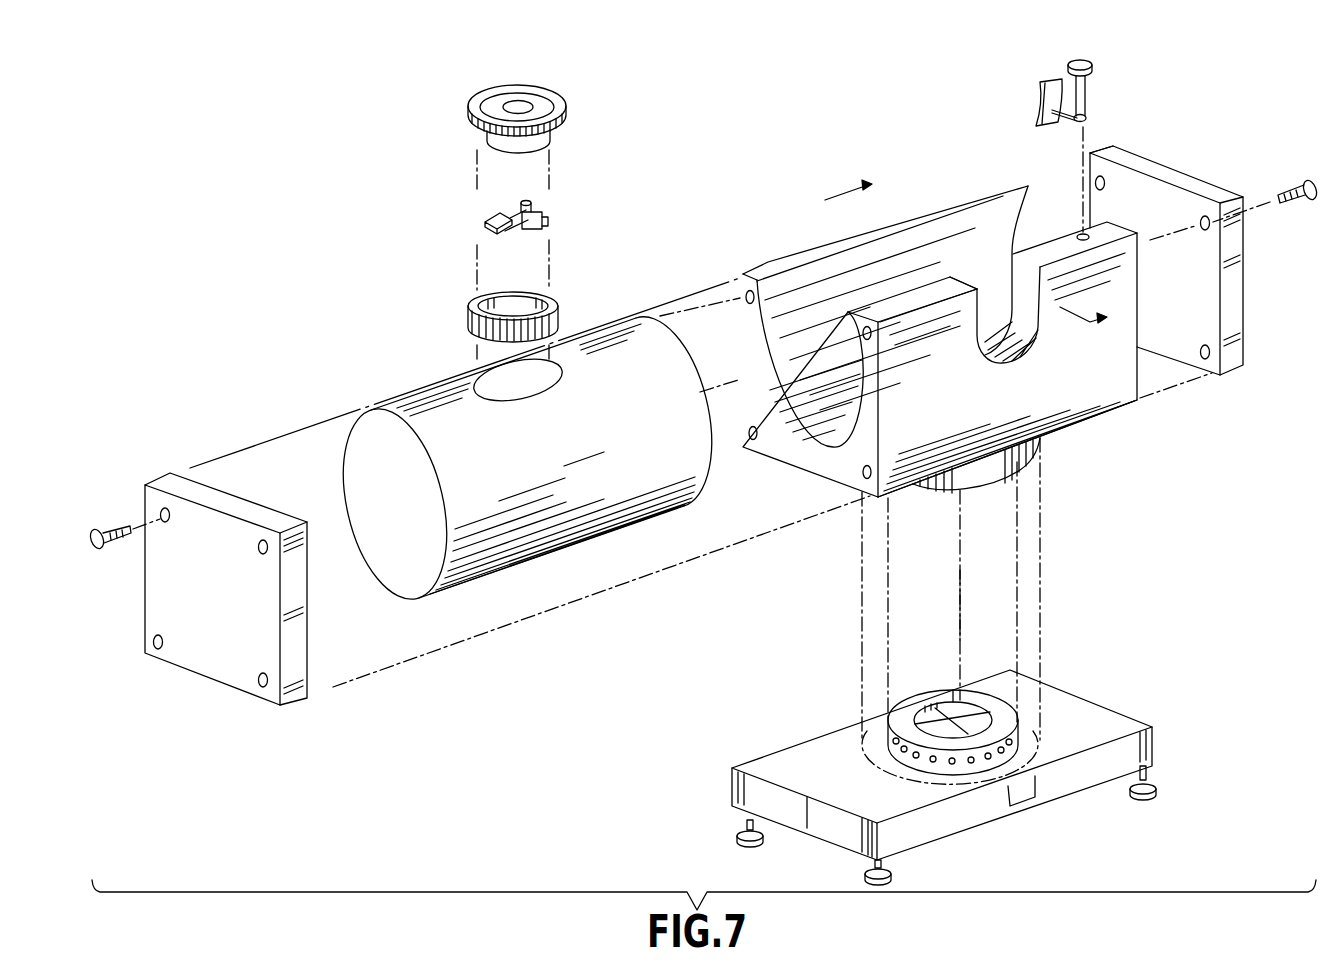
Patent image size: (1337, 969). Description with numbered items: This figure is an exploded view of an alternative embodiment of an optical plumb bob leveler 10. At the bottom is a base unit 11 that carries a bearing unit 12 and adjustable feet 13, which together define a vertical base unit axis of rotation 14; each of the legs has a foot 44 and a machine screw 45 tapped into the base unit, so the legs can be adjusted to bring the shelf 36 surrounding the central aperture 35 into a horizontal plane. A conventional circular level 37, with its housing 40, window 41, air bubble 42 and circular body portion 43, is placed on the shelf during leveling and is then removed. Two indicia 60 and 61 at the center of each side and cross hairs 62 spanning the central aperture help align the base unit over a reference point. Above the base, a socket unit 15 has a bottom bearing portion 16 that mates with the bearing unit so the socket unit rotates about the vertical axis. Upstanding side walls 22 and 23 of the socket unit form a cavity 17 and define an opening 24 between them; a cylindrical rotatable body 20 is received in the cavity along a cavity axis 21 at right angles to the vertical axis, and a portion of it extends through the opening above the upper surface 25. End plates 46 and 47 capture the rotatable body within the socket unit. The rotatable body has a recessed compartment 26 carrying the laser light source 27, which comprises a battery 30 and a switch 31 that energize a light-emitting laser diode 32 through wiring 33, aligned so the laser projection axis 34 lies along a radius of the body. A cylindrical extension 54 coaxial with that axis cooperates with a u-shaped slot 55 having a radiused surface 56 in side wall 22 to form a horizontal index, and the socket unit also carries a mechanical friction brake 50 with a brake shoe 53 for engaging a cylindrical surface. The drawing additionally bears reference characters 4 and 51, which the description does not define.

The section line 4- 4 is at (976, 245).
The optical plumb bob leveler 10 is at (1235, 128).
The base unit 11 is at (1128, 712).
The bearing unit 12 is at (993, 692).
The adjustable feet 13 is at (934, 825).
The base unit axis of rotation 14 is at (960, 566).
The socket unit 15 is at (917, 339).
The bottom bearing portion 16 is at (1033, 457).
The cavity 17 is at (812, 278).
The cylindrical rotatable body 20 is at (568, 537).
The cavity axis 21 is at (740, 385).
The upstanding side wall 22 is at (912, 475).
The upstanding side wall 23 is at (740, 332).
The opening 24 is at (828, 245).
The upper surface 25 is at (948, 202).
The recessed compartment 26 is at (490, 384).
The laser light source 27 is at (488, 205).
The battery 30 is at (485, 222).
The switch 31 is at (548, 220).
The light-emitting laser diode 32 is at (533, 202).
The wiring 33 is at (532, 230).
The laser projection axis 34 is at (510, 308).
The central aperture 35 is at (943, 710).
The shelf 36 is at (1003, 720).
The circular level 37 is at (568, 122).
The housing 40 is at (555, 132).
The window 41 is at (543, 108).
The air bubble 42 is at (530, 105).
The circular body portion 43 is at (500, 147).
The foot 44 is at (738, 830).
The machine screw 45 is at (752, 823).
The end plate 46 is at (158, 592).
The end plate 47 is at (1193, 176).
The mechanical friction brake 50 is at (1095, 112).
The pin head 51 is at (1088, 90).
The brake shoe 53 is at (1075, 118).
The cylindrical extension 54 is at (557, 307).
The u-shaped slot 55 is at (980, 303).
The radiused surface 56 is at (1036, 340).
The indicia 60 is at (1013, 798).
The indicia 61 is at (812, 830).
The cross hairs 62 is at (862, 717).